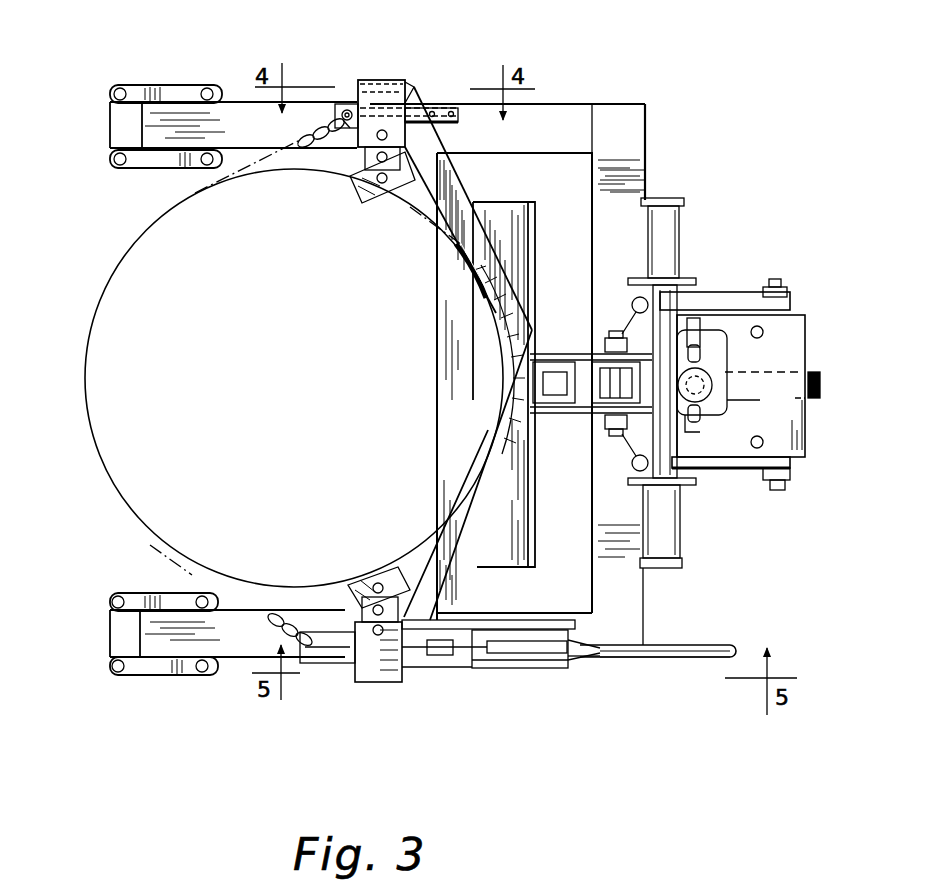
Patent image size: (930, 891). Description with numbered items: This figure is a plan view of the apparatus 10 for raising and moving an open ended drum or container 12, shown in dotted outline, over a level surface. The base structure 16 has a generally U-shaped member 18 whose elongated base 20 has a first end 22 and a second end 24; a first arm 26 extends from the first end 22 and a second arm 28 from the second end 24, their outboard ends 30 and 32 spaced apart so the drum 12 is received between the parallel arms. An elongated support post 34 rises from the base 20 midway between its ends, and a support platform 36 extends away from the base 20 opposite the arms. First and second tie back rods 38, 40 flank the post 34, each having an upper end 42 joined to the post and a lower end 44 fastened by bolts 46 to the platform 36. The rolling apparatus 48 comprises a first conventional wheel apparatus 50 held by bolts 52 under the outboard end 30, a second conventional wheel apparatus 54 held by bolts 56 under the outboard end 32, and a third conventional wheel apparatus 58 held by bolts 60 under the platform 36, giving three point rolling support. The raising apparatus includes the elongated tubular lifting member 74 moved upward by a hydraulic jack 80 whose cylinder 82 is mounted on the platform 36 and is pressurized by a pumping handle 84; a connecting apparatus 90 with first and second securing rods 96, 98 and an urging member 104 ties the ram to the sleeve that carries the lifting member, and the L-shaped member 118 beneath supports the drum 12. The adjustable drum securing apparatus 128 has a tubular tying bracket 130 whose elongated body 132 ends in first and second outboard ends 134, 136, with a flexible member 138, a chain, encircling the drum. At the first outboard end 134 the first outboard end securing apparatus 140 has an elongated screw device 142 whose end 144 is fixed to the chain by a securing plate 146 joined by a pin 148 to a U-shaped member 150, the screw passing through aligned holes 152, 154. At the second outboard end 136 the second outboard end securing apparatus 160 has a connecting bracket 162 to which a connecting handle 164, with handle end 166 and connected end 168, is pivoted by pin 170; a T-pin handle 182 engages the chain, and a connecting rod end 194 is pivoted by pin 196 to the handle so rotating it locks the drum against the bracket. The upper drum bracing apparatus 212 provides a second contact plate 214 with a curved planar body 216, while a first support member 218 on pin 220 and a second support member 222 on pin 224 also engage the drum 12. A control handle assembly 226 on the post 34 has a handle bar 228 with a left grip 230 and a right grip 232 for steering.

The apparatus 10 is at (660, 95).
The open ended drum or container 12 is at (133, 245).
The base structure 16 is at (650, 124).
The U-shaped member 18 is at (548, 100).
The elongated base 20 is at (648, 150).
The first end 22 is at (592, 172).
The second end 24 is at (592, 600).
The first arm 26 is at (592, 100).
The second arm 28 is at (626, 660).
The outboard end 30 is at (110, 125).
The outboard end 32 is at (110, 632).
The elongated support post 34 is at (592, 378).
The support platform 36 is at (805, 315).
The first tie back rod 38 is at (690, 300).
The second tie back rod 40 is at (692, 472).
The upper end 42 is at (635, 300).
The lower end 44 is at (770, 290).
The bolts 46 is at (782, 290).
The rolling apparatus 48 is at (138, 678).
The first conventional wheel apparatus 50 is at (160, 83).
The bolts 52 is at (210, 88).
The second conventional wheel apparatus 54 is at (180, 678).
The bolts 56 is at (118, 596).
The conventional wheel apparatus 58 is at (816, 370).
The bolts 60 is at (763, 332).
The elongated tubular lifting member 74 is at (555, 406).
The hydraulic jack 80 is at (732, 372).
The cylinder 82 is at (708, 388).
The pumping handle 84 is at (700, 320).
The connecting apparatus 90 is at (800, 402).
The first securing rod 96 is at (700, 360).
The second securing rod 98 is at (705, 416).
The urging member 104 is at (690, 428).
The L-shaped member 118 is at (430, 378).
The adjustable drum securing apparatus 128 is at (444, 140).
The tubular tying bracket 130 is at (466, 181).
The elongated body 132 is at (536, 525).
The first outboard end 134 is at (432, 104).
The second outboard end 136 is at (404, 672).
The flexible member 138 is at (302, 146).
The first outboard end securing apparatus 140 is at (410, 80).
The elongated screw device 142 is at (362, 88).
The end 144 is at (366, 96).
The securing plate 146 is at (343, 112).
The pin 148 is at (352, 125).
The U-shaped member 150 is at (343, 110).
The hole 152 is at (382, 128).
The hole 154 is at (415, 110).
The second outboard end securing apparatus 160 is at (338, 666).
The connecting bracket 162 is at (553, 660).
The connecting handle 164 is at (700, 645).
The handle end 166 is at (694, 660).
The connected end 168 is at (470, 622).
The pin 170 is at (480, 668).
The handle 182 is at (372, 612).
The end 194 is at (596, 658).
The pin 196 is at (541, 668).
The upper drum bracing apparatus 212 is at (495, 292).
The second contact plate 214 is at (512, 300).
The curved planar body 216 is at (505, 470).
The first support member 218 is at (390, 205).
The pin 220 is at (375, 172).
The second support member 222 is at (378, 580).
The pin 224 is at (372, 588).
The control handle assembly 226 is at (680, 232).
The handle bar 228 is at (700, 490).
The left grip 230 is at (683, 565).
The right grip 232 is at (688, 200).